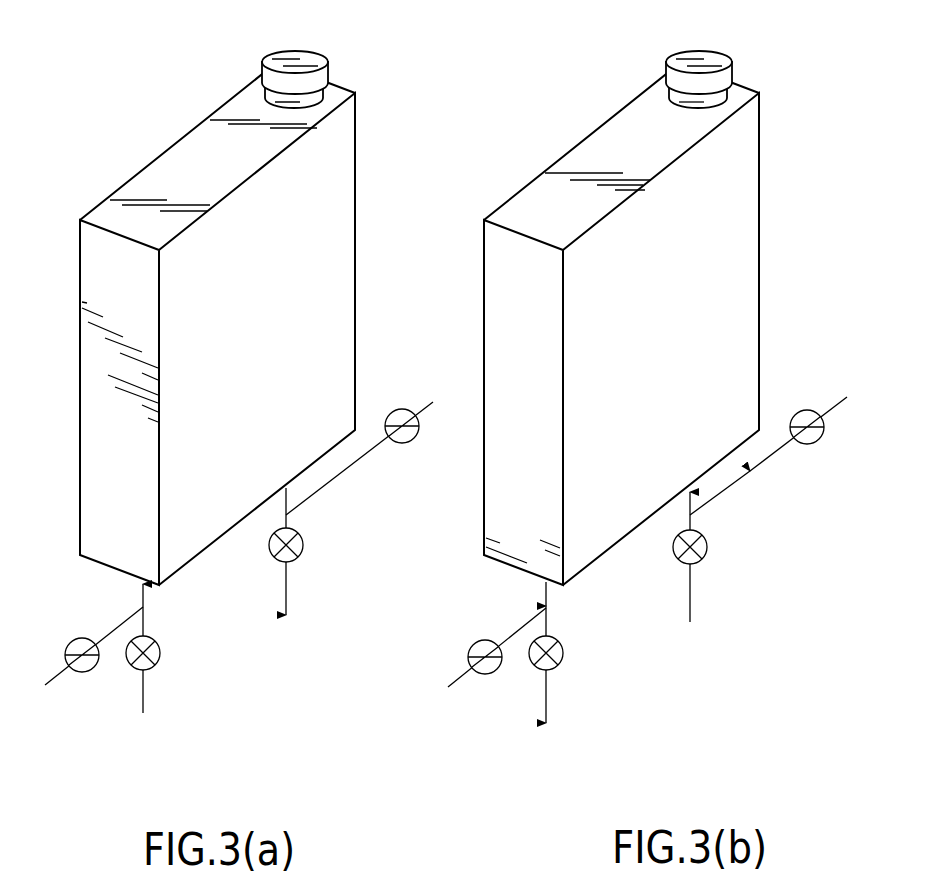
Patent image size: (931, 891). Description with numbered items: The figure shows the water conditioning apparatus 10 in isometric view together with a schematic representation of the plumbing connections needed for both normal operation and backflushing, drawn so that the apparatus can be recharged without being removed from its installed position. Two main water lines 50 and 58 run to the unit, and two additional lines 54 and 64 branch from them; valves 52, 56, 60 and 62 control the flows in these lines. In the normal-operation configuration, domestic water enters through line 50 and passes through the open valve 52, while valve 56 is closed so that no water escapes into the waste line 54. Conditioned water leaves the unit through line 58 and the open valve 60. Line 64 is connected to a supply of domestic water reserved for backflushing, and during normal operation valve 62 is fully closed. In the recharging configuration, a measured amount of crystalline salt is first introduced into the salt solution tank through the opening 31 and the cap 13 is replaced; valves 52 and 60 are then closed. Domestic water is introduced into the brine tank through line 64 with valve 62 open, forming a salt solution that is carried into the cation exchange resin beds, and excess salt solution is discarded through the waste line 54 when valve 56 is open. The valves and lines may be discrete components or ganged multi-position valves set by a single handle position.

In FIG. 3A, the water conditioning apparatus 10 is at (262, 303).
In FIG. 3B, the water conditioning apparatus 10 is at (678, 303).
In FIG. 3B, the cap 13 is at (727, 57).
In FIG. 3B, the opening 31 is at (733, 93).
In FIG. 3A, the main water line 50 is at (145, 662).
In FIG. 3A, the valve 52 is at (158, 641).
In FIG. 3B, the valve 52 is at (560, 645).
In FIG. 3A, the waste line 54 is at (80, 657).
In FIG. 3B, the waste line 54 is at (481, 660).
In FIG. 3A, the valve 56 is at (71, 646).
In FIG. 3B, the valve 56 is at (472, 641).
In FIG. 3A, the main water line 58 is at (289, 568).
In FIG. 3A, the valve 60 is at (301, 540).
In FIG. 3B, the valve 60 is at (703, 540).
In FIG. 3A, the valve 62 is at (394, 413).
In FIG. 3B, the valve 62 is at (802, 412).
In FIG. 3A, the line 64 is at (374, 449).
In FIG. 3B, the line 64 is at (783, 447).